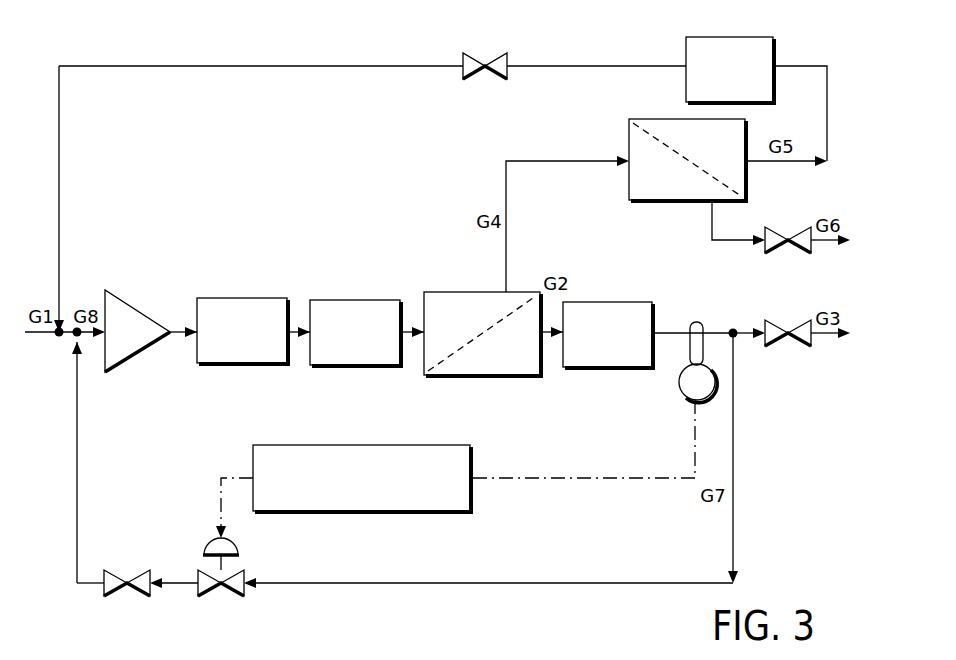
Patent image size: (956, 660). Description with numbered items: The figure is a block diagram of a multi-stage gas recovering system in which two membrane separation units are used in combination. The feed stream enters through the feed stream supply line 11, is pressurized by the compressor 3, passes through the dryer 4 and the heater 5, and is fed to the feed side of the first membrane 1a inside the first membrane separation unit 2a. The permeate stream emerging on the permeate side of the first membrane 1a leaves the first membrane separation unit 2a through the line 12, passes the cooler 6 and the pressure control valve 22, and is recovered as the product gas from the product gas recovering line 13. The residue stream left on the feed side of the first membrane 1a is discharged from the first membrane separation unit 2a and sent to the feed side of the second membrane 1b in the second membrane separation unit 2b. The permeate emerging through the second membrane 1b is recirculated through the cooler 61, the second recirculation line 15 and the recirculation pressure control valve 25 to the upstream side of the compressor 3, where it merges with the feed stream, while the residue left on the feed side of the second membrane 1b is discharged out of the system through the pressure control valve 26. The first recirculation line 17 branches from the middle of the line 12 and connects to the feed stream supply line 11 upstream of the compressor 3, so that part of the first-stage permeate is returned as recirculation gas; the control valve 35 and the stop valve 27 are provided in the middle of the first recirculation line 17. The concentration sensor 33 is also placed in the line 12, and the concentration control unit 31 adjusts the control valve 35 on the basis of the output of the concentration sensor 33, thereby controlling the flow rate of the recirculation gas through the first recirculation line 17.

The feed stream supply line 11 is at (44, 340).
The compressor 3 is at (112, 372).
The dryer 4 is at (265, 362).
The heater 5 is at (352, 367).
The first membrane separation unit 2a is at (536, 369).
The first membrane 1a is at (446, 362).
The cooler 6 is at (630, 368).
The line 12 is at (668, 332).
The concentration sensor 33 is at (705, 322).
The pressure control valve 22 is at (780, 350).
The product gas recovering line 13 is at (822, 340).
The second recirculation line 15 is at (588, 66).
The recirculation pressure control valve 25 is at (487, 63).
The cooler 61 is at (776, 50).
The second membrane separation unit 2b is at (654, 177).
The second membrane 1b is at (655, 137).
The pressure control valve 26 is at (790, 228).
The concentration control unit 31 is at (372, 512).
The first recirculation line 17 is at (560, 585).
The control valve 35 is at (228, 598).
The stop valve 27 is at (133, 570).